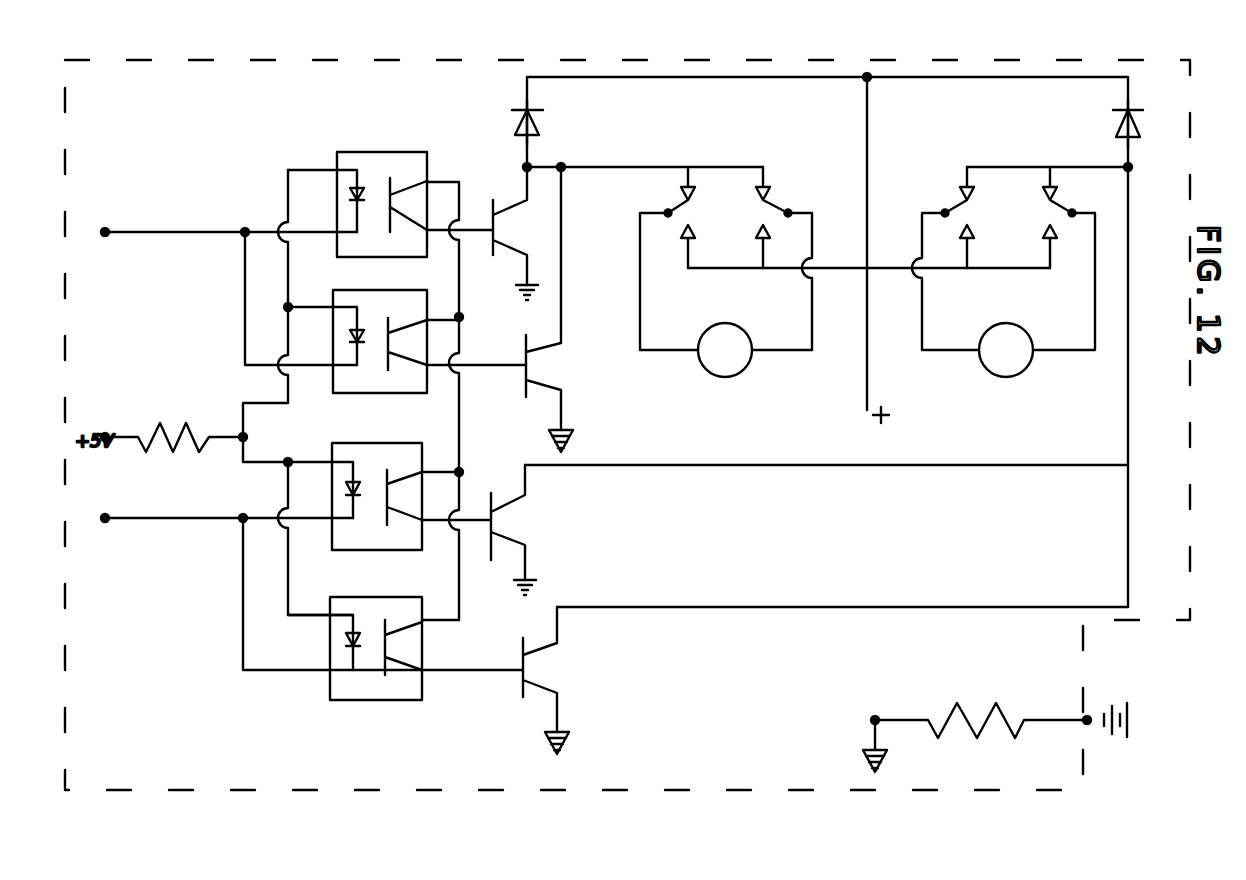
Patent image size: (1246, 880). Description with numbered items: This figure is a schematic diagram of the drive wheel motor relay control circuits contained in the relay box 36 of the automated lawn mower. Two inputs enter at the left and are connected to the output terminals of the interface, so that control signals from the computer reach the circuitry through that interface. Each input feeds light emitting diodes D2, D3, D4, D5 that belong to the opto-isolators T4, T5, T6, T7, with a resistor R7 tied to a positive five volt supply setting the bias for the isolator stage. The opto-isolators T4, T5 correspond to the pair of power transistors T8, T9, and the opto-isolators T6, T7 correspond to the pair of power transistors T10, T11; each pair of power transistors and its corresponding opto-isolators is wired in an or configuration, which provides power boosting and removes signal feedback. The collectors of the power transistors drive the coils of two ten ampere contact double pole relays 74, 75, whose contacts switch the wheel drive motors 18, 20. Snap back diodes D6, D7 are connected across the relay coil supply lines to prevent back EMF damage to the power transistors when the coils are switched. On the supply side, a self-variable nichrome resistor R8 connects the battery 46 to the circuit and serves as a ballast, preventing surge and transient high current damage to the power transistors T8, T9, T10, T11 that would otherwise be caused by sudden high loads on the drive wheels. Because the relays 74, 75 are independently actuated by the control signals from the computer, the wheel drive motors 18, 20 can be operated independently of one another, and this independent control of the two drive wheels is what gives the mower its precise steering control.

The relay box 36 is at (1190, 118).
The light emitting diode of optical isolator D2 is at (349, 178).
The light emitting diode of optical isolator D3 is at (357, 305).
The light emitting diode of optical isolator D4 is at (353, 482).
The light emitting diode of optical isolator D5 is at (346, 639).
The opto-isolator T4 is at (390, 178).
The opto-isolator T5 is at (388, 318).
The opto-isolator T6 is at (387, 470).
The opto-isolator T7 is at (385, 620).
The power transistor T8 is at (493, 200).
The power transistor T9 is at (526, 338).
The power transistor T10 is at (491, 495).
The power transistor T11 is at (523, 647).
The snap back diode D6 is at (545, 118).
The snap back diode D7 is at (1112, 128).
The resistor R7 is at (132, 437).
The self-variable nichrome resistor R8 is at (1015, 712).
The double pole relay 74 is at (763, 167).
The double pole relay 75 is at (998, 167).
The wheel drive motor 18 is at (722, 377).
The wheel drive motor 20 is at (1010, 377).
The battery 46 is at (1125, 683).